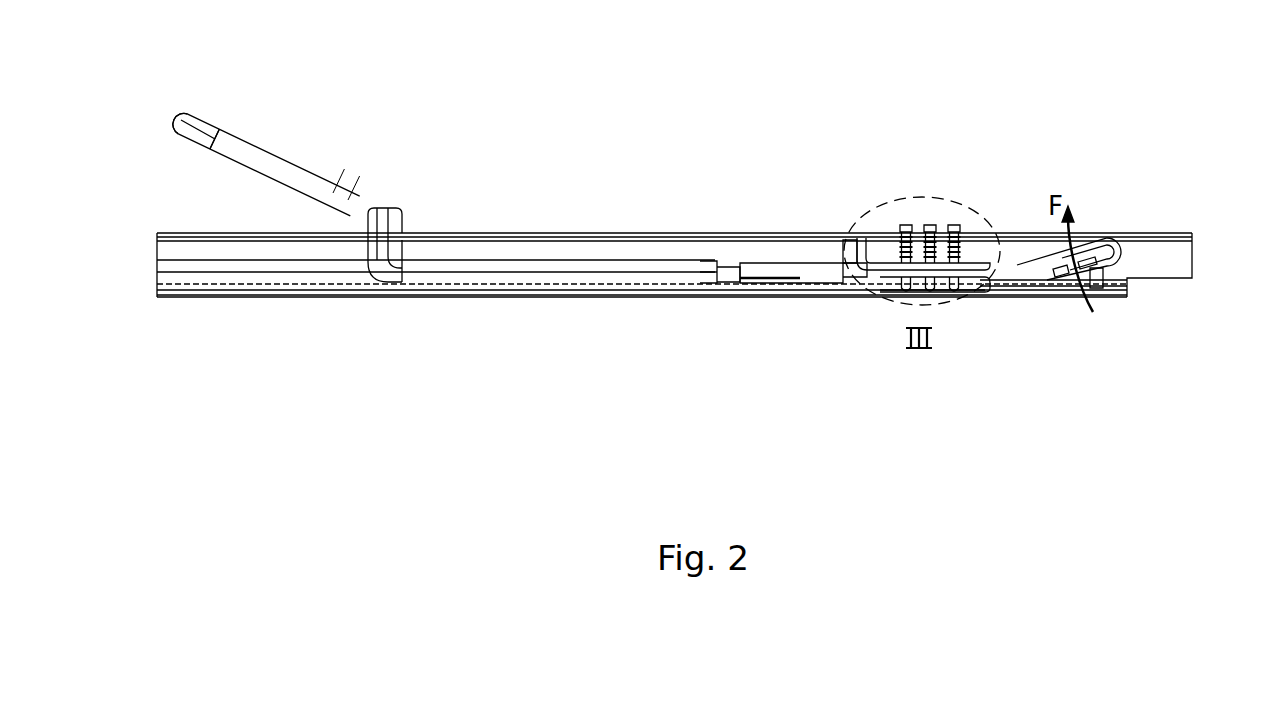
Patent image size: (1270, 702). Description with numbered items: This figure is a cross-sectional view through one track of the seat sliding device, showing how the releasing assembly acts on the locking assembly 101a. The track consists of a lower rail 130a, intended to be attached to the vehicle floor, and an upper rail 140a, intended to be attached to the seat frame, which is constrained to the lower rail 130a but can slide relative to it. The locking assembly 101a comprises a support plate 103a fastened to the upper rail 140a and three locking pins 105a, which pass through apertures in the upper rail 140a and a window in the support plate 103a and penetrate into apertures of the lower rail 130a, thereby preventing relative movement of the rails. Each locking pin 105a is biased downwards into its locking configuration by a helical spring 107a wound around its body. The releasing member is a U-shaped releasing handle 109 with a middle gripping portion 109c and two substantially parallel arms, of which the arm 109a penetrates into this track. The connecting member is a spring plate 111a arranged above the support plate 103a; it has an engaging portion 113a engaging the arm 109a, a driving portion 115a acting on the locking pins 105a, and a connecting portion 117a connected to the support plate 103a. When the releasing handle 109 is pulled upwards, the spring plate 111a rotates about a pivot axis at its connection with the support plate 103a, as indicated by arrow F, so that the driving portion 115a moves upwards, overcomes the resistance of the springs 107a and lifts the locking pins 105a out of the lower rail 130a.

The releasing handle 109 is at (282, 149).
The middle gripping portion 109c is at (182, 112).
The arm 109a is at (405, 228).
The upper rail 140a is at (668, 232).
The lower rail 130a is at (274, 296).
The engaging portion 113a is at (763, 284).
The helical spring 107a is at (843, 258).
The spring plate 111a is at (890, 271).
The locking pin 105a is at (930, 225).
The locking assembly 101a is at (968, 253).
The driving portion 115a is at (982, 292).
The connecting portion 117a is at (1178, 208).
The support plate 103a is at (1100, 270).